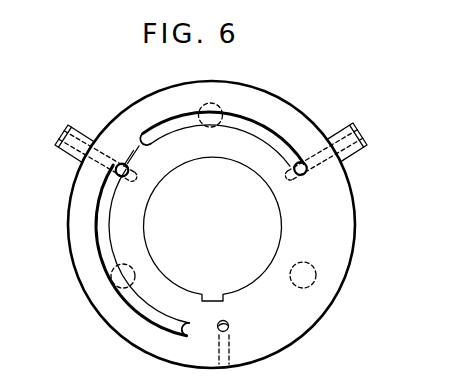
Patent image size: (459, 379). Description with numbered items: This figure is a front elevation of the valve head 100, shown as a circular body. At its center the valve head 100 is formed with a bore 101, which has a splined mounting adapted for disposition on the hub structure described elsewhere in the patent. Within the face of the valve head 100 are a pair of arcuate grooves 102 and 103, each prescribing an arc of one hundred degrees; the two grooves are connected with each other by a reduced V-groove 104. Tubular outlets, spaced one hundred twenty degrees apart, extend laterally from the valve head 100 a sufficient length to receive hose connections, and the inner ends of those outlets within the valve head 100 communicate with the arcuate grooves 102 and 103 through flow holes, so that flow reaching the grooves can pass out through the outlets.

The valve head 100 is at (294, 333).
The bore 101 is at (274, 197).
The arcuate groove 102 is at (103, 253).
The arcuate groove 103 is at (245, 114).
The reduced V-groove 104 is at (128, 158).